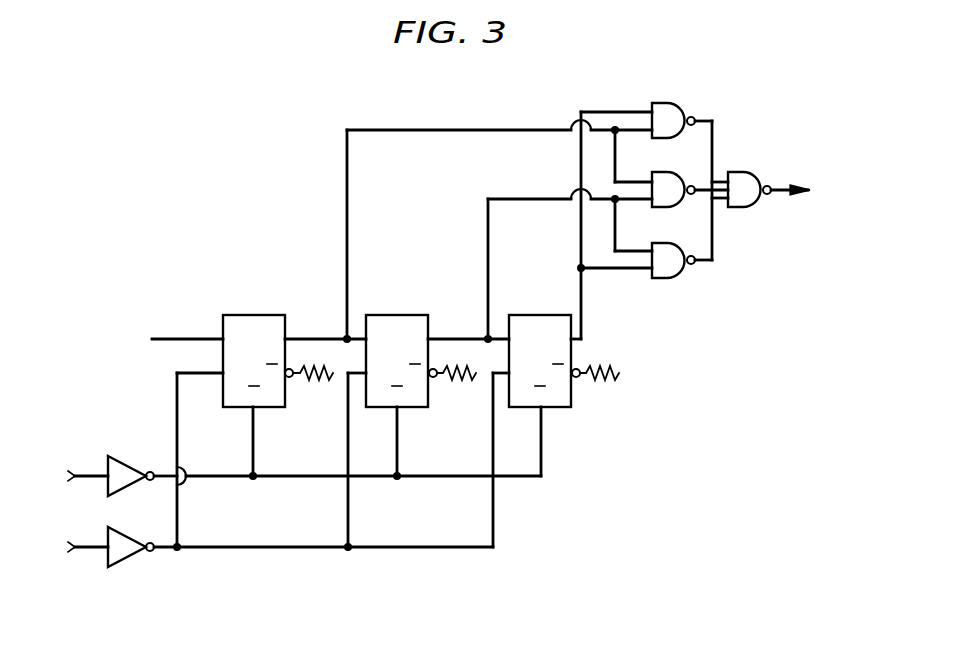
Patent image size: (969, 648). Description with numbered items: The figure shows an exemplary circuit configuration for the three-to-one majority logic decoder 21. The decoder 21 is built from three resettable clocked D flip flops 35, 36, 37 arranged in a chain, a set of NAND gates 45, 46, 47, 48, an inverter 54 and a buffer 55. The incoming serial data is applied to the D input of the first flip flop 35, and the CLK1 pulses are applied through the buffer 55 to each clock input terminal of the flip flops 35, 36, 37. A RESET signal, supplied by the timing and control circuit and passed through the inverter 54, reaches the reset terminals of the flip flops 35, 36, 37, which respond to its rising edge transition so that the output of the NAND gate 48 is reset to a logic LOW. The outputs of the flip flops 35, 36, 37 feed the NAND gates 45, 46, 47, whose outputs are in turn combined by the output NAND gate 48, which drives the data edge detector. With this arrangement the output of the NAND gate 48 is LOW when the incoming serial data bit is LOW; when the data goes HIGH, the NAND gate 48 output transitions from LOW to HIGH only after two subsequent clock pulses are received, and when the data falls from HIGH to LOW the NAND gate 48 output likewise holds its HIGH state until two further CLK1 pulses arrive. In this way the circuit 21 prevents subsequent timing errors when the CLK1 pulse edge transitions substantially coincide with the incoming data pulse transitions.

The 3:1 majority logic decoder 21 is at (251, 194).
The resettable clocked D flip flop 35 is at (253, 315).
The resettable clocked D flip flop 36 is at (397, 315).
The resettable clocked D flip flop 37 is at (540, 315).
The NAND gate 45 is at (655, 103).
The NAND gate 46 is at (662, 172).
The NAND gate 47 is at (668, 279).
The NAND gate 48 is at (747, 208).
The inverter 54 is at (138, 467).
The buffer 55 is at (138, 555).